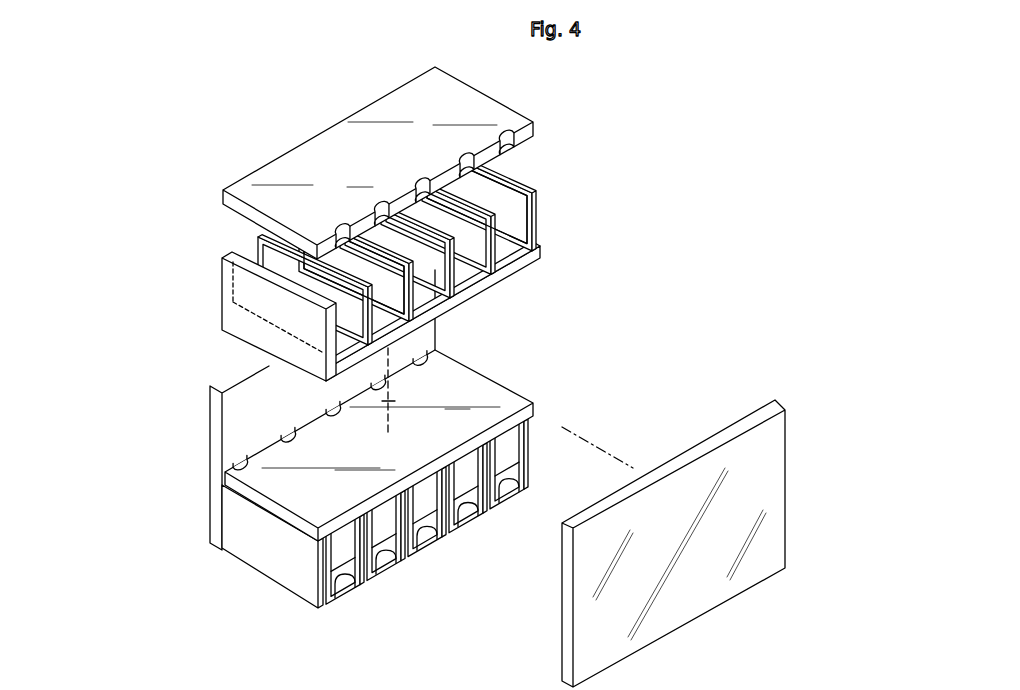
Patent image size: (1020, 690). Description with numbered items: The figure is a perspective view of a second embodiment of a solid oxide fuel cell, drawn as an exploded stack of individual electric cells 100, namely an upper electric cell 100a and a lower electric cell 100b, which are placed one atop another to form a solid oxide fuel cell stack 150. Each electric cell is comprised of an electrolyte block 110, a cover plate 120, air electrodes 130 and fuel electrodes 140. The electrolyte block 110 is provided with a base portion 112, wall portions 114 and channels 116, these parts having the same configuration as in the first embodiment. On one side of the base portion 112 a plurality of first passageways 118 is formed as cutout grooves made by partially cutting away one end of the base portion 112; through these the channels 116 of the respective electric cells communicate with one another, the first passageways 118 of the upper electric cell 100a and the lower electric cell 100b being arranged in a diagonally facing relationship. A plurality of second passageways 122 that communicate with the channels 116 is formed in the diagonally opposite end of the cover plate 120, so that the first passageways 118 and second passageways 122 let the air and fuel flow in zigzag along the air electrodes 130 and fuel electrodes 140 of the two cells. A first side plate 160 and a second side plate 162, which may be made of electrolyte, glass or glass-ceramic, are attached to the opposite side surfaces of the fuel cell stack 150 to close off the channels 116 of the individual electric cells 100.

The individual electric cell 100 is at (655, 295).
The upper electric cell 100a is at (537, 255).
The lower electric cell 100b is at (537, 404).
The electrolyte block 110 is at (218, 273).
The base portion 112 is at (466, 300).
The wall portion 114 is at (262, 333).
The channel 116 is at (485, 273).
The first passageway 118 is at (248, 290).
The cover plate 120 is at (297, 170).
The second passageway 122 is at (508, 133).
The air electrode 130 is at (535, 223).
The fuel electrode 140 is at (474, 212).
The solid oxide fuel cell stack 150 is at (188, 228).
The first side plate 160 is at (693, 590).
The second side plate 162 is at (213, 432).